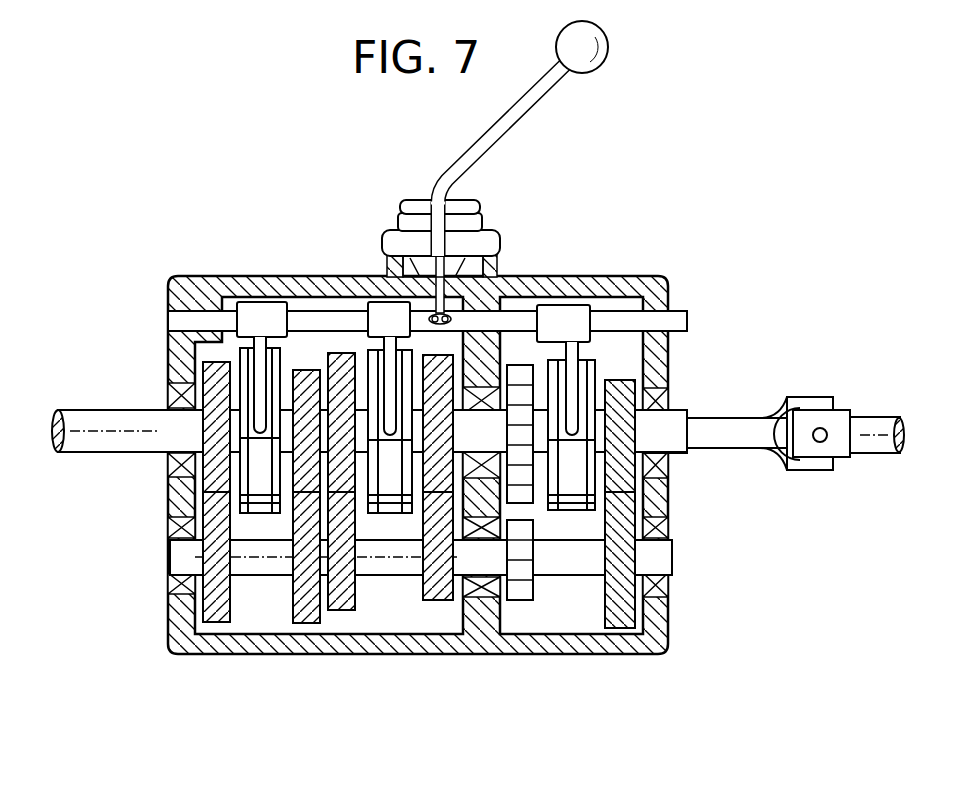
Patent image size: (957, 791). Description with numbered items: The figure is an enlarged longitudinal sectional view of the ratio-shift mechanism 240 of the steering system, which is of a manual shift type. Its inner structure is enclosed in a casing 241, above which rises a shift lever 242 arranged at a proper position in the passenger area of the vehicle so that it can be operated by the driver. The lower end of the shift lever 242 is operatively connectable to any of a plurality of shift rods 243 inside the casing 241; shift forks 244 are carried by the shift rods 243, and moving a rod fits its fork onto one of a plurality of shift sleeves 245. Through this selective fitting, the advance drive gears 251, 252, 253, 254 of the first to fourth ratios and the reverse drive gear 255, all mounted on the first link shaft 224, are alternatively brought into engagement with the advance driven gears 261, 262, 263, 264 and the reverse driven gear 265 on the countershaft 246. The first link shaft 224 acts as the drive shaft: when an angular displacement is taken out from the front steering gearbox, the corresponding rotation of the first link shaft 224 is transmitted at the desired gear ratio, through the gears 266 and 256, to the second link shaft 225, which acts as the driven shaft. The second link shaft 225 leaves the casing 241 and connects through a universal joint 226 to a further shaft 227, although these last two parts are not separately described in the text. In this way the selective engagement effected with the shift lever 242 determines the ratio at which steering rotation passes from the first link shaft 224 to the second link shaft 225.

The first link shaft 224 is at (97, 423).
The second link shaft 225 is at (752, 438).
The universal joint 226 is at (818, 405).
The drive shaft 227 is at (878, 440).
The ratio-shift mechanism 240 is at (378, 178).
The casing 241 is at (392, 643).
The shift lever 242 is at (532, 98).
The shift rods 243 is at (297, 317).
The shift forks 244 is at (257, 357).
The shift sleeves 245 is at (257, 493).
The countershaft 246 is at (392, 563).
The advance drive gear 251 is at (213, 382).
The advance drive gear 252 is at (305, 387).
The advance drive gear 253 is at (340, 357).
The advance drive gear 254 is at (437, 368).
The reverse drive gear 255 is at (518, 385).
The gear 256 is at (617, 393).
The advance driven gear 261 is at (218, 608).
The advance driven gear 262 is at (310, 612).
The advance driven gear 263 is at (343, 597).
The advance driven gear 264 is at (440, 585).
The reverse driven gear 265 is at (522, 583).
The gear 266 is at (623, 612).